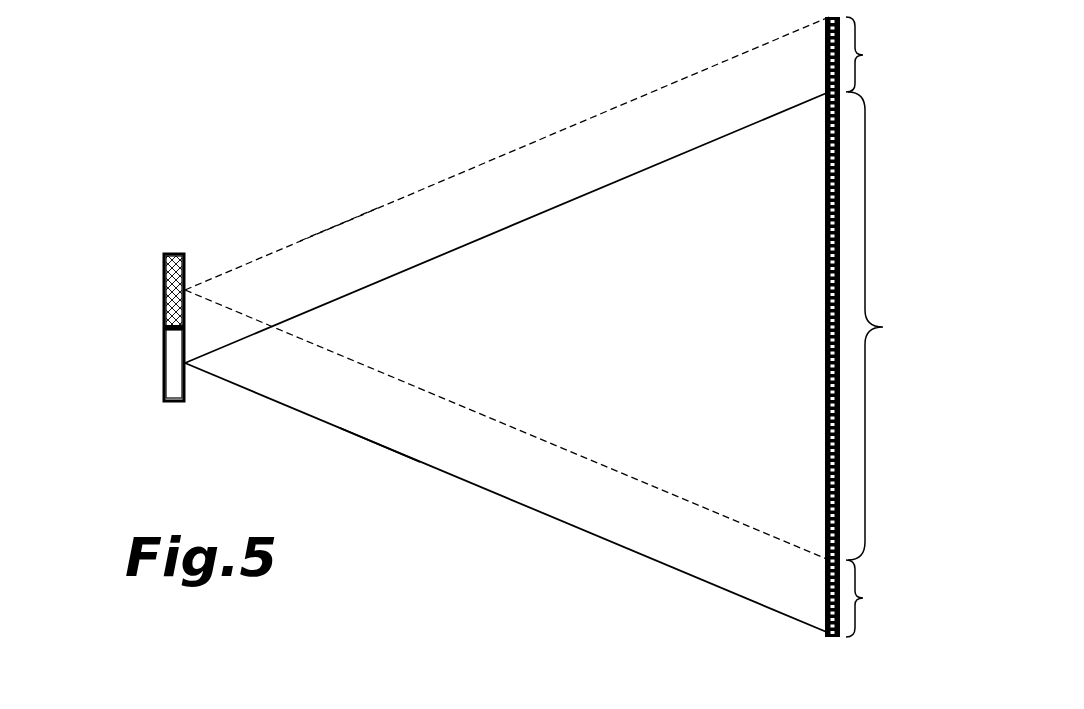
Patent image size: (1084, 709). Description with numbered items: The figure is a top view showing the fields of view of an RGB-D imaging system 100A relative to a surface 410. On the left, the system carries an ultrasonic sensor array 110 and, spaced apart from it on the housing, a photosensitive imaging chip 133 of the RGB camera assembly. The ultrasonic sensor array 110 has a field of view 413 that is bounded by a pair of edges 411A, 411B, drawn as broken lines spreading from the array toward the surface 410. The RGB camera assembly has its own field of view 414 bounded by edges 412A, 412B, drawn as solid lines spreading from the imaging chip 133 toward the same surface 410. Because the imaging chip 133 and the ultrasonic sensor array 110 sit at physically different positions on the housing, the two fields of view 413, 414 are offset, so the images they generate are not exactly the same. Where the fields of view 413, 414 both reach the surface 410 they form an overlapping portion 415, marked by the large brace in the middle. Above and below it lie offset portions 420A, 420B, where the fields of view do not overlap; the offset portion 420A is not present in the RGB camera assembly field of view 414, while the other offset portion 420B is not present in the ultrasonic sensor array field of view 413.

The optical device 100A is at (153, 216).
The ultrasonic sensor array 110 is at (160, 290).
The photosensitive imaging chip 133 is at (164, 362).
The surface 410 is at (822, 325).
The edge 411A is at (487, 140).
The edge 411B is at (520, 430).
The edge 412A is at (520, 226).
The edge 412B is at (497, 503).
The field of view 413 is at (326, 196).
The field of view 414 is at (345, 468).
The overlapping portion 415 is at (885, 326).
The offset portion 420A is at (881, 54).
The offset portion 420B is at (881, 598).